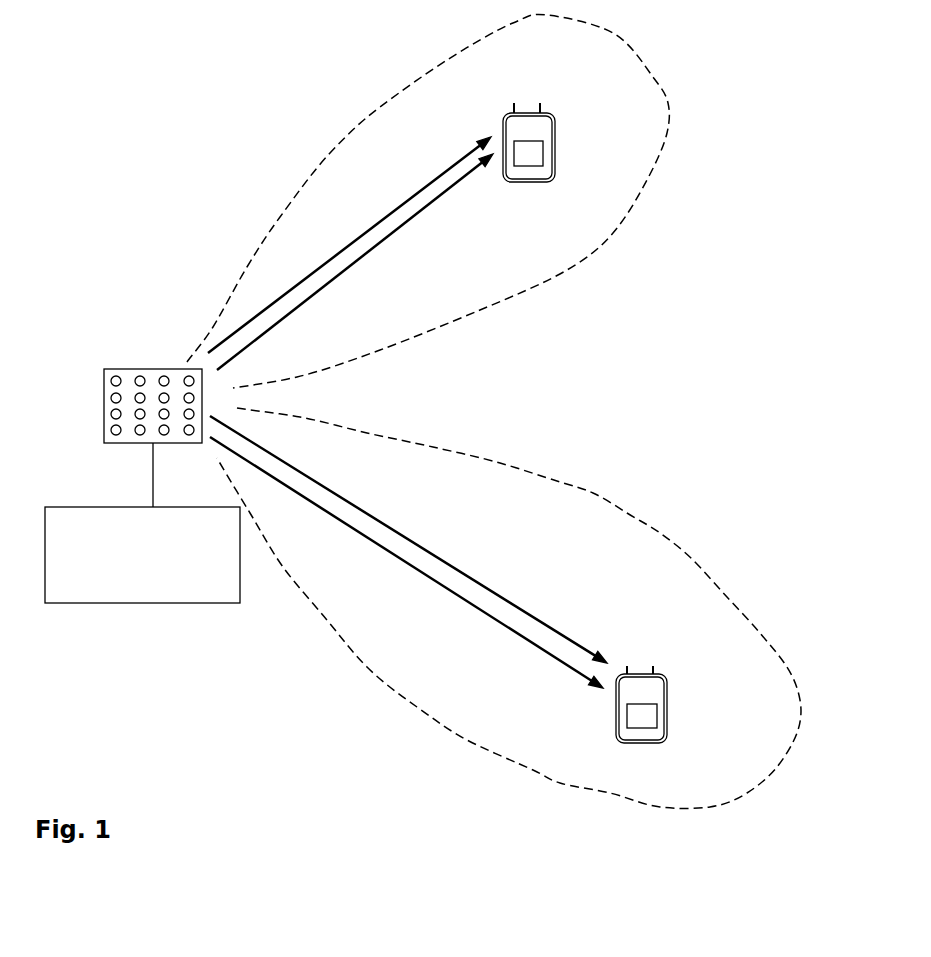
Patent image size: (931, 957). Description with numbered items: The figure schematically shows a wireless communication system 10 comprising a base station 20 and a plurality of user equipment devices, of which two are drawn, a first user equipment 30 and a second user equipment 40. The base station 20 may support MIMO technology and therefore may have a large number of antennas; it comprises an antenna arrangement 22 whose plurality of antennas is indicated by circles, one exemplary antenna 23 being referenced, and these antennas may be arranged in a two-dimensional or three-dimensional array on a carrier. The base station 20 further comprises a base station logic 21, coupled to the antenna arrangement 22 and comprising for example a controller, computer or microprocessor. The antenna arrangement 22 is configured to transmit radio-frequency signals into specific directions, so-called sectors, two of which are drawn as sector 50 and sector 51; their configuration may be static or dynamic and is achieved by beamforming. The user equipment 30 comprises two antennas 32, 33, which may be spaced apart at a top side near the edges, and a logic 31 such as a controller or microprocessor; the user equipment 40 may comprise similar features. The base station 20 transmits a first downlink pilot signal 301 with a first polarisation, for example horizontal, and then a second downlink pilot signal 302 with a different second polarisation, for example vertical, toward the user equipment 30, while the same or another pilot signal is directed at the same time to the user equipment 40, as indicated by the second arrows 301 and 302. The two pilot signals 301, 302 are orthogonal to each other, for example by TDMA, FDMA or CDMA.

The wireless communication system 10 is at (738, 115).
The base station 20 is at (83, 355).
The base station logic 21 is at (240, 603).
The antenna arrangement 22 is at (92, 449).
The antenna 23 is at (162, 376).
The user equipment 30 is at (617, 738).
The logic 31 is at (657, 722).
The antenna 32 is at (628, 666).
The antenna 33 is at (656, 668).
The user equipment 40 is at (504, 176).
The sector 50 is at (567, 270).
The sector 51 is at (588, 492).
The first downlink pilot signal 301 is at (357, 242).
The second downlink pilot signal 302 is at (340, 273).